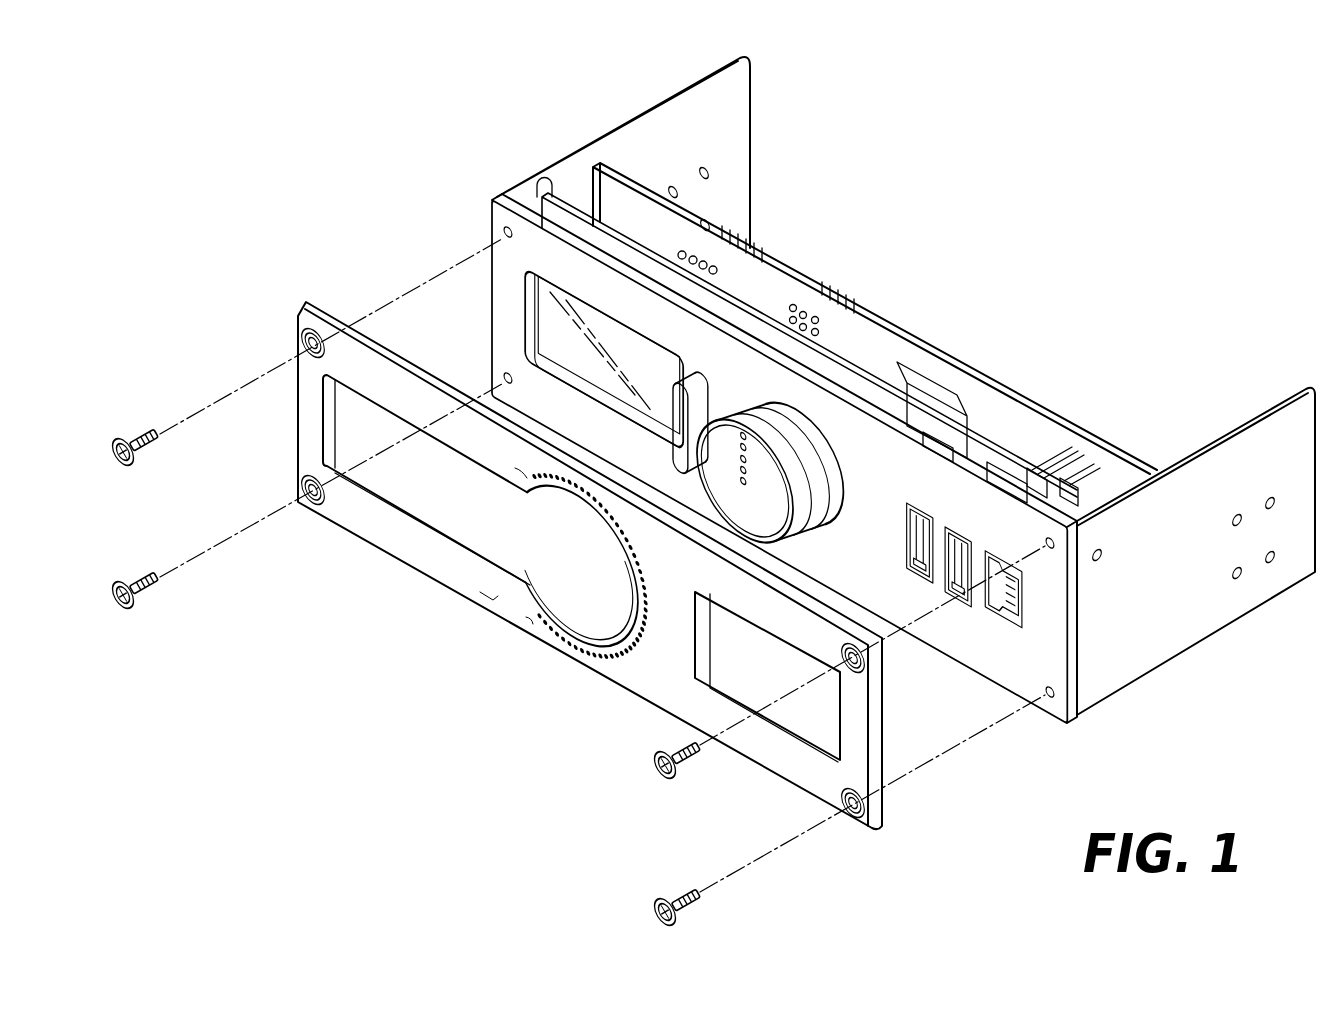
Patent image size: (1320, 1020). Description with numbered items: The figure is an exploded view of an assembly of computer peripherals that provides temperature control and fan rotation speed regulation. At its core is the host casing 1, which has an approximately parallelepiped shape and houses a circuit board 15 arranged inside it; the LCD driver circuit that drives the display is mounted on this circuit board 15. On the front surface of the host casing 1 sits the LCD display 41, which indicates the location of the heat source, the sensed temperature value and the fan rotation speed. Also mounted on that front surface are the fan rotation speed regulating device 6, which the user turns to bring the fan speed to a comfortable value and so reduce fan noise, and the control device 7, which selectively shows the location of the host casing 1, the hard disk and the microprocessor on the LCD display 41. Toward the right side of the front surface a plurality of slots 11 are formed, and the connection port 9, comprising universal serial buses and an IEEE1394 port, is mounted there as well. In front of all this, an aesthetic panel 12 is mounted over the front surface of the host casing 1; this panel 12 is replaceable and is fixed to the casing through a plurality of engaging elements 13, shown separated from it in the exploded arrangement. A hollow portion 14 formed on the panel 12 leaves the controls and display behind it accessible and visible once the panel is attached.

The host casing 1 is at (1193, 617).
The fan rotation speed regulating device 6 is at (785, 448).
The control device 7 is at (677, 403).
The connection port 9 is at (1042, 488).
The slots 11 is at (998, 603).
The aesthetic panel 12 is at (657, 683).
The engaging elements 13 is at (660, 783).
The hollow portion 14 is at (437, 500).
The circuit board 15 is at (933, 387).
The LCD display 41 is at (553, 325).